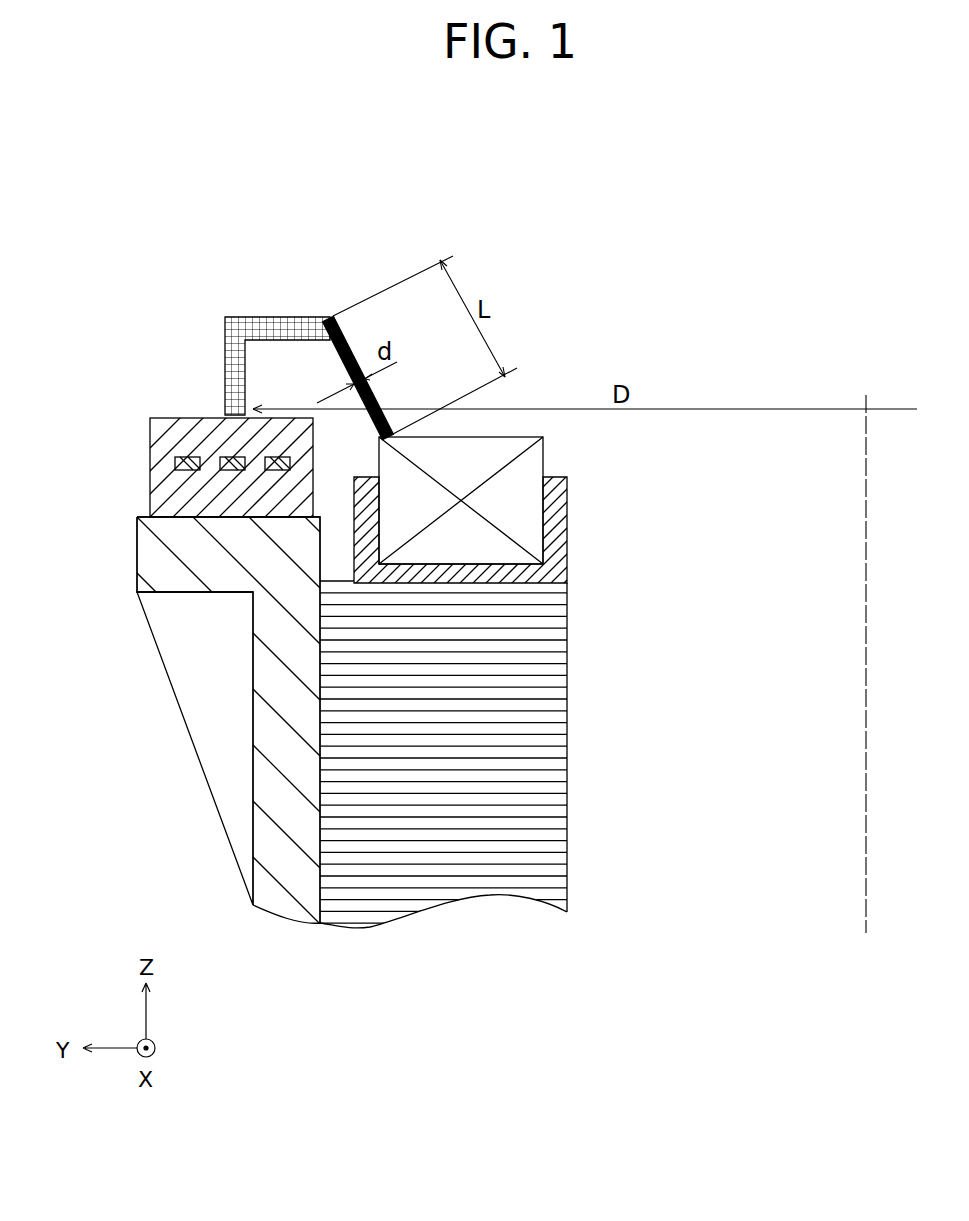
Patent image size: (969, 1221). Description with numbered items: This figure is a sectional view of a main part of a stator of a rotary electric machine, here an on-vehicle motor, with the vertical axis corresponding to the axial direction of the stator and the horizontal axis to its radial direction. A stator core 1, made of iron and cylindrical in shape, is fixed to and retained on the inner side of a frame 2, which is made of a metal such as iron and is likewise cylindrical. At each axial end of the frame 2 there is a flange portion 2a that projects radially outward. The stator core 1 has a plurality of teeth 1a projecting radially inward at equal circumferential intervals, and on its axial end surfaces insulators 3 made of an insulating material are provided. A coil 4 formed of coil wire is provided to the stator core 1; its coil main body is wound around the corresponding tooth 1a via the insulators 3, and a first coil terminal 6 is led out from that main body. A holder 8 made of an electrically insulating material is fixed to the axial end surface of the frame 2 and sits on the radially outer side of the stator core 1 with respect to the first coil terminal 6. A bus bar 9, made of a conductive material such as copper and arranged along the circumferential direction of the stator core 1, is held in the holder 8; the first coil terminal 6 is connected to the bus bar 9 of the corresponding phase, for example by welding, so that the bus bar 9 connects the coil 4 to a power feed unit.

The stator core 1 is at (340, 703).
The tooth 1a is at (568, 755).
The frame 2 is at (252, 777).
The flange portion 2a is at (175, 593).
The insulator 3 is at (567, 517).
The coil 4 is at (512, 448).
The first coil terminal 6 is at (345, 340).
The holder 8 is at (150, 461).
The bus bar 9 is at (225, 362).